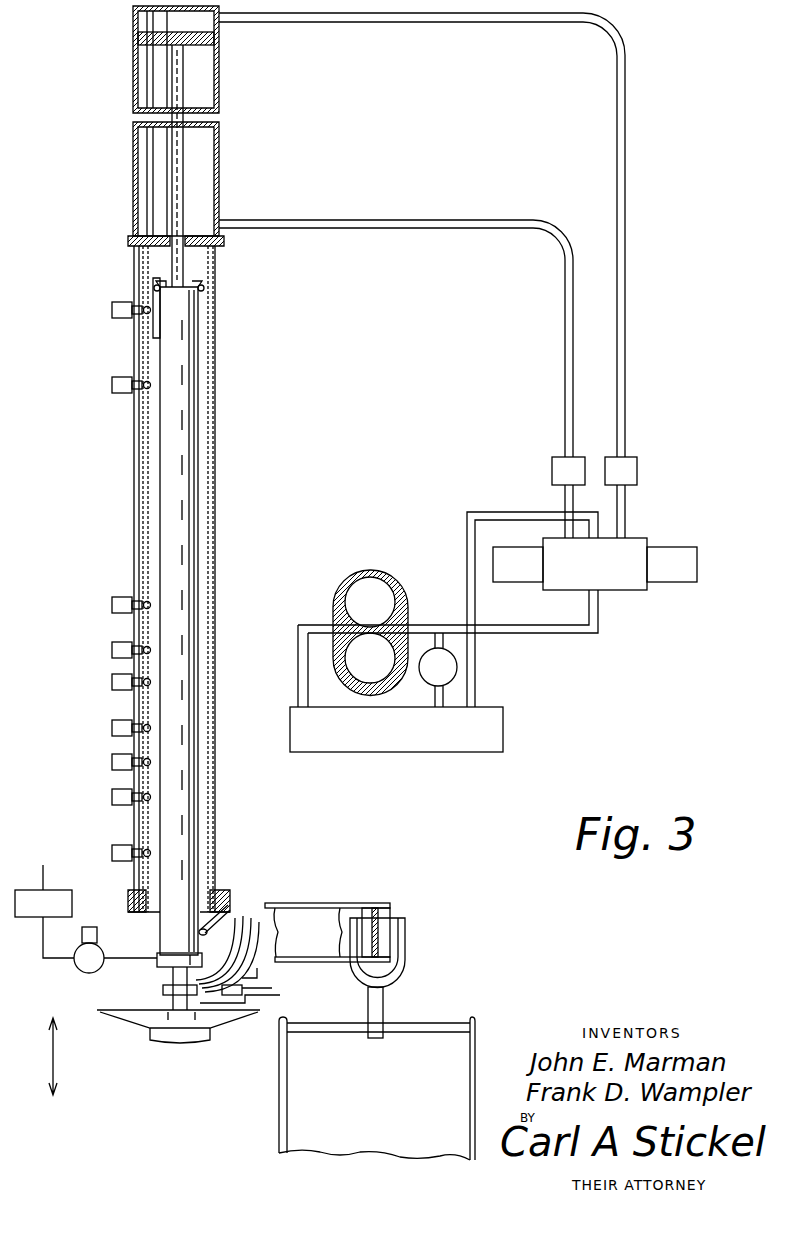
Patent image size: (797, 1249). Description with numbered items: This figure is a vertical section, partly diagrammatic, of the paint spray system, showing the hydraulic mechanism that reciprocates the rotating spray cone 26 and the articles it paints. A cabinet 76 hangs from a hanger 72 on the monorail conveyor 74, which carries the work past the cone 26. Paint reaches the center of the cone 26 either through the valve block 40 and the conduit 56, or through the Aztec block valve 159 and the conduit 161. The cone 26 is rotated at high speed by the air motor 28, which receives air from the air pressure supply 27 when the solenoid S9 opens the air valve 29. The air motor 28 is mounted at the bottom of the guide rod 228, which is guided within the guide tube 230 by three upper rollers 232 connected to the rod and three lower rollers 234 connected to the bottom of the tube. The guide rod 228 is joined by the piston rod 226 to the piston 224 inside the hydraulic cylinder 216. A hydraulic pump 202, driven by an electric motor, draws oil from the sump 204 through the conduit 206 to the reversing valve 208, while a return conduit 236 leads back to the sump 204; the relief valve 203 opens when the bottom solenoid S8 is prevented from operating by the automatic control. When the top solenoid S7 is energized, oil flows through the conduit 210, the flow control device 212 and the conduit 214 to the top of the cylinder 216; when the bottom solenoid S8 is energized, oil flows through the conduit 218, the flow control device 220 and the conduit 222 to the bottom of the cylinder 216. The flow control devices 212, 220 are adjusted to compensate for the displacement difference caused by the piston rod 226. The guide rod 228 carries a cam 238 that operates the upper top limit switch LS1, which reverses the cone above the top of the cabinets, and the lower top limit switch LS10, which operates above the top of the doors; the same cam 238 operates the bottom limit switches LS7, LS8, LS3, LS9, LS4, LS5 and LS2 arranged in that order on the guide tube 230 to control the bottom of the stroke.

The piston 224 is at (170, 42).
The hydraulic cylinder 216 is at (135, 133).
The piston rod 226 is at (176, 182).
The upper rollers 232 is at (158, 284).
The limit switch operating cam 238 is at (153, 325).
The guide rod 228 is at (184, 456).
The guide tube 230 is at (216, 530).
The upper top limit switch LS1 is at (112, 309).
The lower top limit switch LS10 is at (112, 385).
The bottom limit switch LS7 is at (112, 605).
The bottom limit switch LS8 is at (112, 650).
The bottom limit switch LS3 is at (112, 682).
The bottom limit switch LS9 is at (112, 728).
The bottom limit switch LS4 is at (112, 762).
The bottom limit switch LS5 is at (112, 797).
The bottom limit switch LS2 is at (120, 848).
The conduit 214 is at (626, 117).
The conduit 222 is at (566, 290).
The flow control device 220 is at (562, 462).
The flow control device 212 is at (625, 465).
The conduit 218 is at (566, 499).
The conduit 210 is at (626, 517).
The reversing valve 208 is at (618, 588).
The bottom solenoid S8 is at (521, 568).
The top solenoid S7 is at (683, 578).
The return conduit 236 is at (470, 530).
The conduit 206 is at (557, 632).
The hydraulic pump 202 is at (369, 572).
The relief valve 203 is at (455, 675).
The sump 204 is at (432, 738).
The air pressure supply 27 is at (32, 892).
The solenoid S9 is at (91, 927).
The air valve 29 is at (77, 964).
The air motor 28 is at (158, 955).
The valve block 40 is at (165, 990).
The conduit 56 is at (165, 1009).
The cone 26 is at (140, 1020).
The lower rollers 234 is at (232, 903).
The conduit 161 is at (250, 1004).
The Aztec block valve 159 is at (243, 989).
The monorail conveyor 74 is at (350, 902).
The hanger 72 is at (384, 1002).
The cabinet 76 is at (280, 1112).